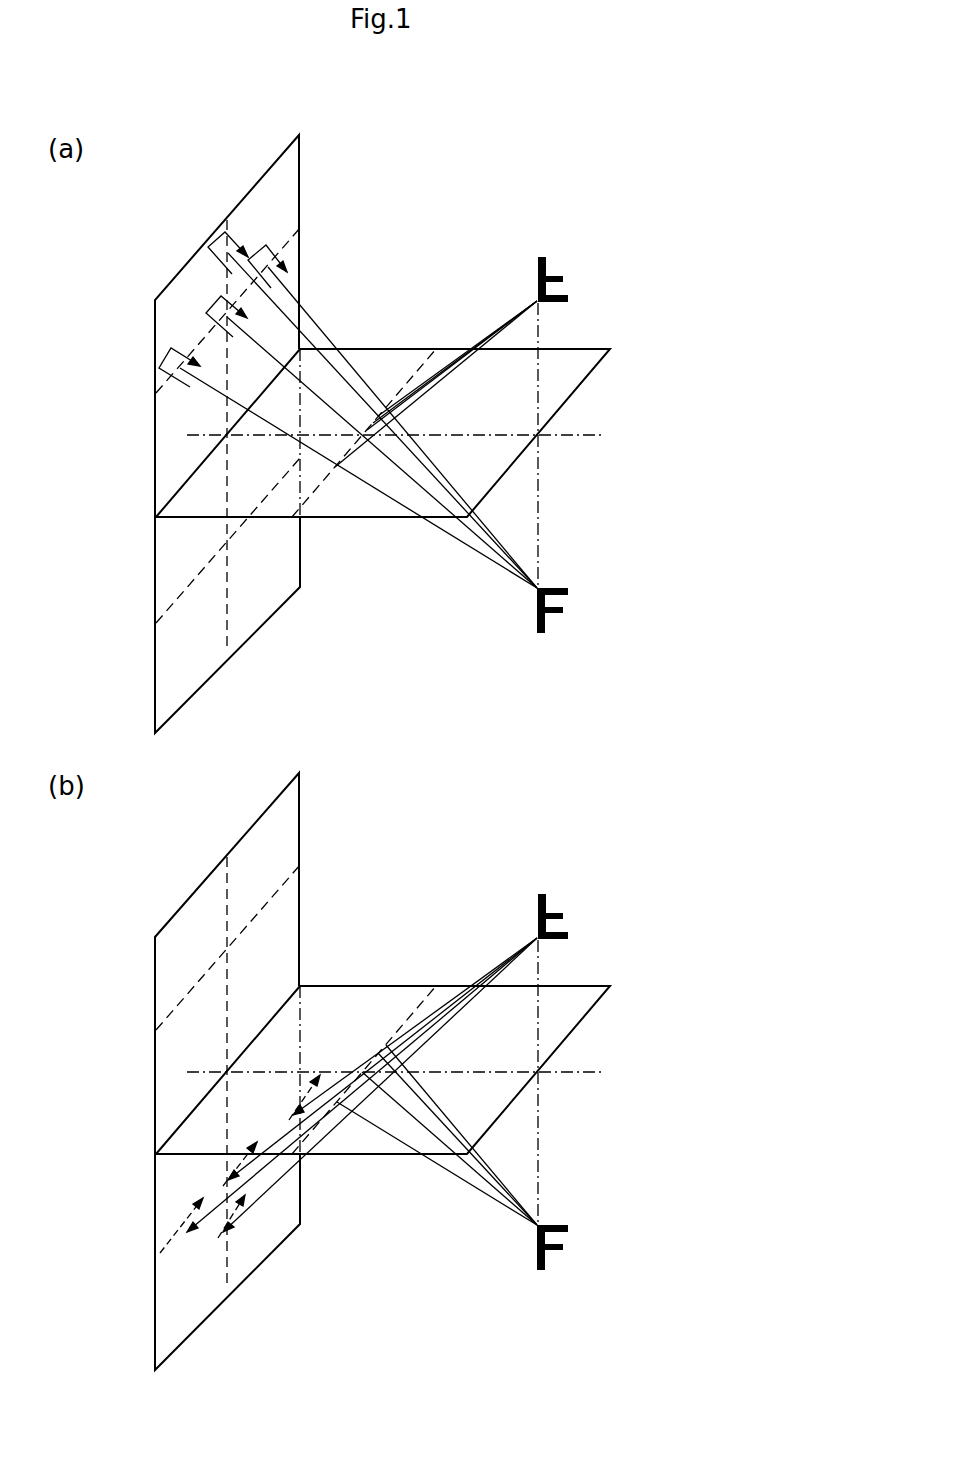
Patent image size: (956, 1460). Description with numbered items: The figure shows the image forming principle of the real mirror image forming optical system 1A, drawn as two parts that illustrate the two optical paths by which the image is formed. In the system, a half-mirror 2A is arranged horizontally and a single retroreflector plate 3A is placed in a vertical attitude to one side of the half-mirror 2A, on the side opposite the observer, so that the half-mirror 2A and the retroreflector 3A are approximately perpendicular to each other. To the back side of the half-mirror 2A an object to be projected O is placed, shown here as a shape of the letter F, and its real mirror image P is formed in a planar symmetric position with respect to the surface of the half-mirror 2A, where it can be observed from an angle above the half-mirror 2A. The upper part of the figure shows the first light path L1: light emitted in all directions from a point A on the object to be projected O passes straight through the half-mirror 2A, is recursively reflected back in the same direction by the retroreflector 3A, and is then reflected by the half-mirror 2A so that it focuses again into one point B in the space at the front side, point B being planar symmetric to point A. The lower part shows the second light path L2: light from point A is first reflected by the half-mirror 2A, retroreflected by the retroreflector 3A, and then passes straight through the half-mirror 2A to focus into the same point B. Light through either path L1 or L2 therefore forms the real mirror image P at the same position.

The real mirror image forming optical system 1A is at (446, 241).
The half-mirror 2A is at (574, 362).
The retroreflector plate 3A is at (293, 189).
The real mirror image P is at (563, 264).
The point on the object to be projected A is at (537, 301).
The focus point B is at (540, 587).
The object to be projected O is at (532, 623).
The first light path L1 is at (348, 410).
The second light path L2 is at (348, 1095).